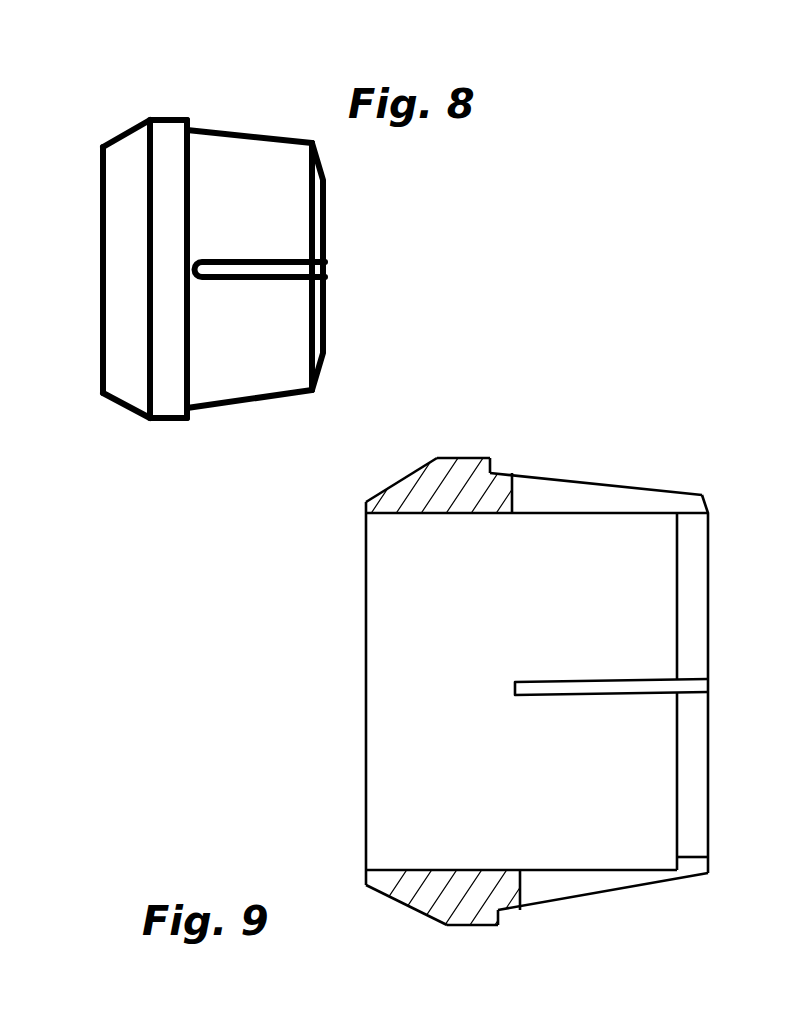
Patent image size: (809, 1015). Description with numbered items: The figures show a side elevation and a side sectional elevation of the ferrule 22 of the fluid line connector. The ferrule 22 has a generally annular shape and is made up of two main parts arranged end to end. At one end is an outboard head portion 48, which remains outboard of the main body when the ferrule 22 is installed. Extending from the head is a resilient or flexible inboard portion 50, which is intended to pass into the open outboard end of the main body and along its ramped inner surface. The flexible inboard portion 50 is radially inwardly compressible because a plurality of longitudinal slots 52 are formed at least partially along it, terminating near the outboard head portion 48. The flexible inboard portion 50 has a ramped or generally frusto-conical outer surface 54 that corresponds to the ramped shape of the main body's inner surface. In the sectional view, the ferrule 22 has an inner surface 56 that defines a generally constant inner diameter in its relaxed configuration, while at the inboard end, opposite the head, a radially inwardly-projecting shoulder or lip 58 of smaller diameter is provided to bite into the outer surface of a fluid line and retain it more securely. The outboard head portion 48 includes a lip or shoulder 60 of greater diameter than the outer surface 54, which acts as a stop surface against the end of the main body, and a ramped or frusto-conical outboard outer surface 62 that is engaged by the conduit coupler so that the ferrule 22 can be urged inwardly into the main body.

In FIG. 8, the ferrule 22 is at (213, 303).
In FIG. 9, the ferrule 22 is at (563, 627).
In FIG. 8, the outboard head portion 48 is at (159, 112).
In FIG. 9, the outboard head portion 48 is at (447, 433).
In FIG. 8, the flexible inboard portion 50 is at (255, 265).
In FIG. 9, the flexible inboard portion 50 is at (599, 685).
In FIG. 8, the longitudinal slots 52 is at (334, 268).
In FIG. 9, the longitudinal slots 52 is at (720, 687).
In FIG. 8, the frusto-conical outer surface 54 is at (278, 133).
In FIG. 9, the frusto-conical outer surface 54 is at (556, 474).
In FIG. 9, the inner surface 56 is at (495, 517).
In FIG. 9, the shoulder or lip 58 is at (667, 519).
In FIG. 8, the lip or shoulder 60 is at (198, 114).
In FIG. 9, the lip or shoulder 60 is at (498, 454).
In FIG. 8, the frusto-conical outboard outer surface 62 is at (117, 134).
In FIG. 9, the frusto-conical outboard outer surface 62 is at (393, 480).